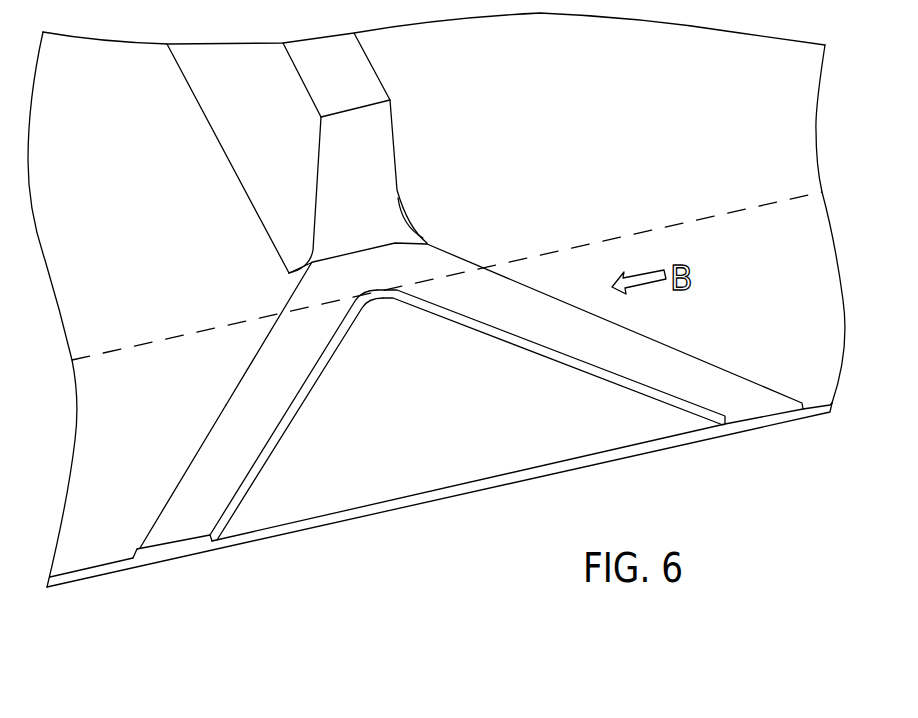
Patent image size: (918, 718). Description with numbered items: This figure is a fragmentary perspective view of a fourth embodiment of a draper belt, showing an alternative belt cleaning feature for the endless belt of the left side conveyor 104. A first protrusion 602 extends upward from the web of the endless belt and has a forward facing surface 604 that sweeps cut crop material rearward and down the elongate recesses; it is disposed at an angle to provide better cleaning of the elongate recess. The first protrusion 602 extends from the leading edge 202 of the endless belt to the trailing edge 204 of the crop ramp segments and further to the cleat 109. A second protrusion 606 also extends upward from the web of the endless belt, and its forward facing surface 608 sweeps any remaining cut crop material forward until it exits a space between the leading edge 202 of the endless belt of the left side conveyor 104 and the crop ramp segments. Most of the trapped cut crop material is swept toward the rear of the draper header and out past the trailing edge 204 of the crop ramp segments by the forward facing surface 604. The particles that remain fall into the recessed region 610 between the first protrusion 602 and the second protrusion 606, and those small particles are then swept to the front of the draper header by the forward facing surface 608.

The left side conveyor 104 is at (750, 282).
The cleat 109 is at (367, 153).
The leading edge of the endless belt 202 is at (752, 418).
The trailing edge of the crop ramp segments 204 is at (607, 240).
The first protrusion 602 is at (197, 453).
The forward facing surface of the first protrusion 604 is at (223, 409).
The second protrusion 606 is at (740, 397).
The forward facing surface of the second protrusion 608 is at (606, 376).
The recessed region 610 is at (415, 432).